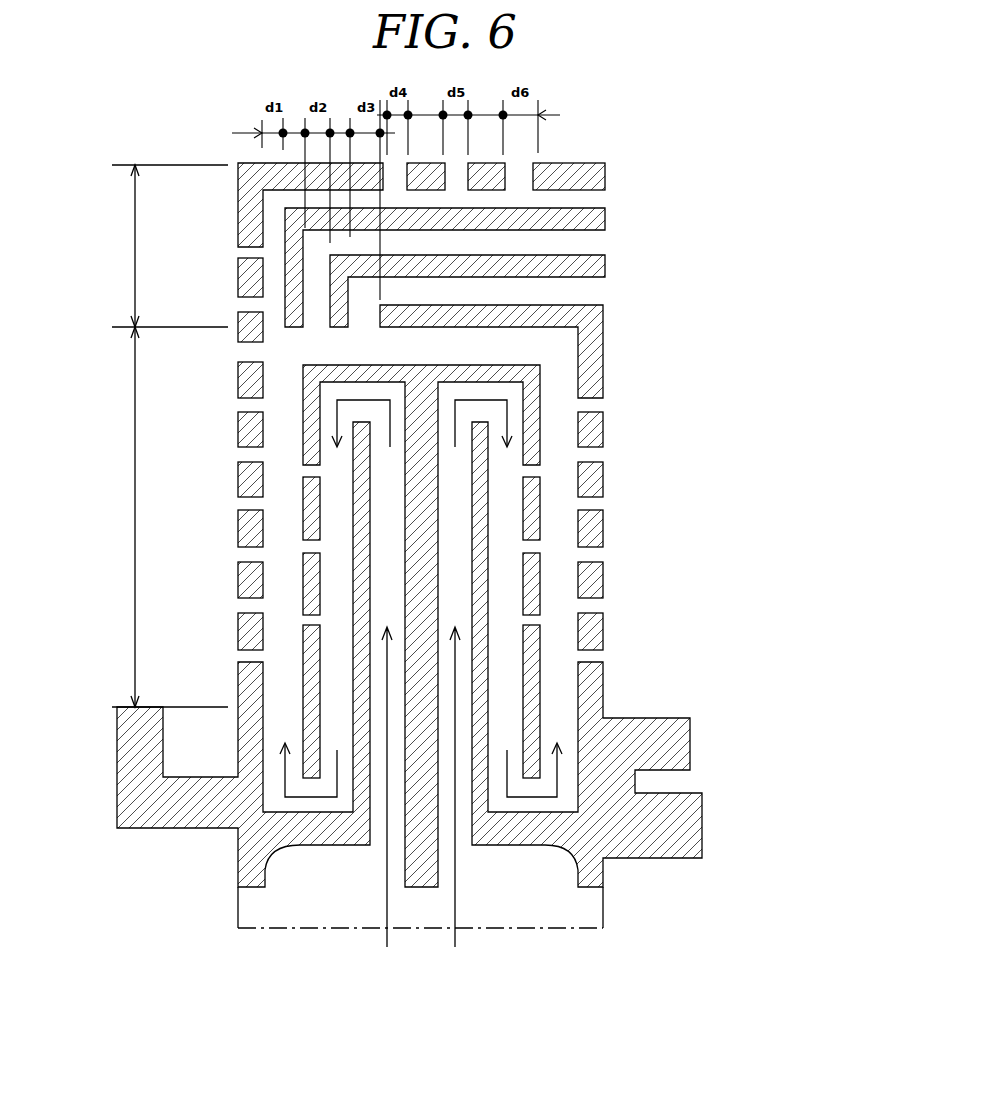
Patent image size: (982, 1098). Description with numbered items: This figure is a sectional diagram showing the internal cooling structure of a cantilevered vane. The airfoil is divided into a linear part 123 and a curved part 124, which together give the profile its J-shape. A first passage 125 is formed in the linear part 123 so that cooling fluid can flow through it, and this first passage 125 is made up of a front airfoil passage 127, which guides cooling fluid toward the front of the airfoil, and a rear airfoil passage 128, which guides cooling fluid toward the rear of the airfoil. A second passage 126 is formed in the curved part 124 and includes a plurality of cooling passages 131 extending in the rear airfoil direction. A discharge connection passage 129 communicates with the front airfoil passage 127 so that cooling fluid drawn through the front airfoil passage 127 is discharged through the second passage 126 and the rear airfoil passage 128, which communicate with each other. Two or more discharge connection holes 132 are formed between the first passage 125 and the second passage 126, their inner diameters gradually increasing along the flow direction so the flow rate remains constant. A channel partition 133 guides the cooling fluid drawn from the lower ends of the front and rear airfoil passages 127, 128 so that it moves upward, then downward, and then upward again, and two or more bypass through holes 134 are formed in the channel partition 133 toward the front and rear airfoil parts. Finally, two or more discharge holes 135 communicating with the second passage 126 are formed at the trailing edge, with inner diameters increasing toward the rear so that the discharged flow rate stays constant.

The linear part 123 is at (166, 517).
The curved part 124 is at (166, 246).
The first passage 125 is at (466, 627).
The second passage 126 is at (502, 257).
The front airfoil passage 127 is at (285, 535).
The rear airfoil passage 128 is at (557, 535).
The discharge connection passage 129 is at (430, 331).
The cooling passages 131 is at (504, 208).
The discharge connection holes 132 is at (360, 318).
The channel partition 133 is at (435, 500).
The bypass through holes 134 is at (310, 473).
The discharge holes 135 is at (395, 181).